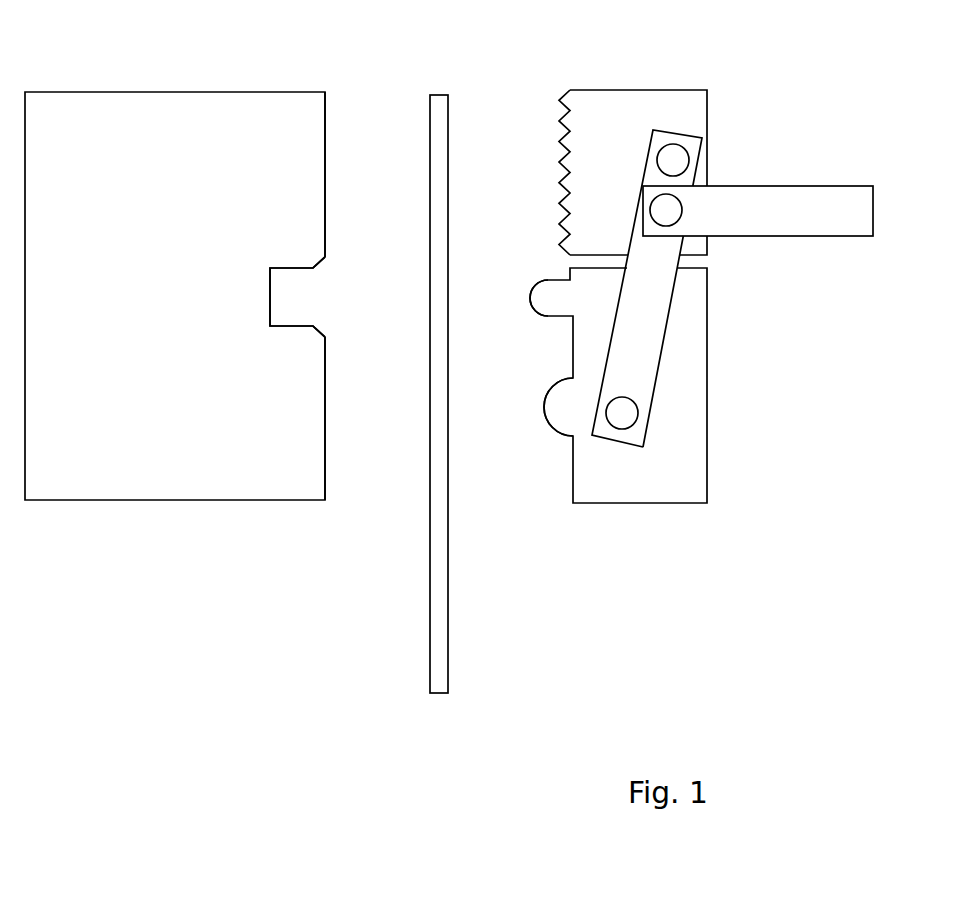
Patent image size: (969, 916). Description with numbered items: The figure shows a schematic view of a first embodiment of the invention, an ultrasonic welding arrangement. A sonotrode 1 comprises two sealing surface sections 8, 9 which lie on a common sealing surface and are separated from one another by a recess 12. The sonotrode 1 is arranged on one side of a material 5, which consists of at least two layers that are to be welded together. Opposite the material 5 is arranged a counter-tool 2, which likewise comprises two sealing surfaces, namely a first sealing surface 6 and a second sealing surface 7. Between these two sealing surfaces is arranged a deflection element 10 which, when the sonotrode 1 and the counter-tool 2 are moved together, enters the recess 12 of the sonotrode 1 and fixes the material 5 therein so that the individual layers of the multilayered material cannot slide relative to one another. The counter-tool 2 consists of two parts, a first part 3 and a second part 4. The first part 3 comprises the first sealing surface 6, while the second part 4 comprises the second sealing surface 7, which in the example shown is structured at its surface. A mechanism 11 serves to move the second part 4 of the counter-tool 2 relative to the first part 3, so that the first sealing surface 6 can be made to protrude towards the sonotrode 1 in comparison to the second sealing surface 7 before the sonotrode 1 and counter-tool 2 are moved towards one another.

The sonotrode 1 is at (120, 502).
The counter-tool 2 is at (678, 304).
The first part 3 is at (665, 487).
The second part 4 is at (628, 108).
The material 5 is at (438, 672).
The first sealing surface 6 is at (553, 425).
The second sealing surface 7 is at (558, 162).
The sealing surface section 8 is at (330, 477).
The sealing surface section 9 is at (328, 125).
The deflection element 10 is at (537, 285).
The mechanism 11 is at (795, 212).
The recess 12 is at (293, 303).